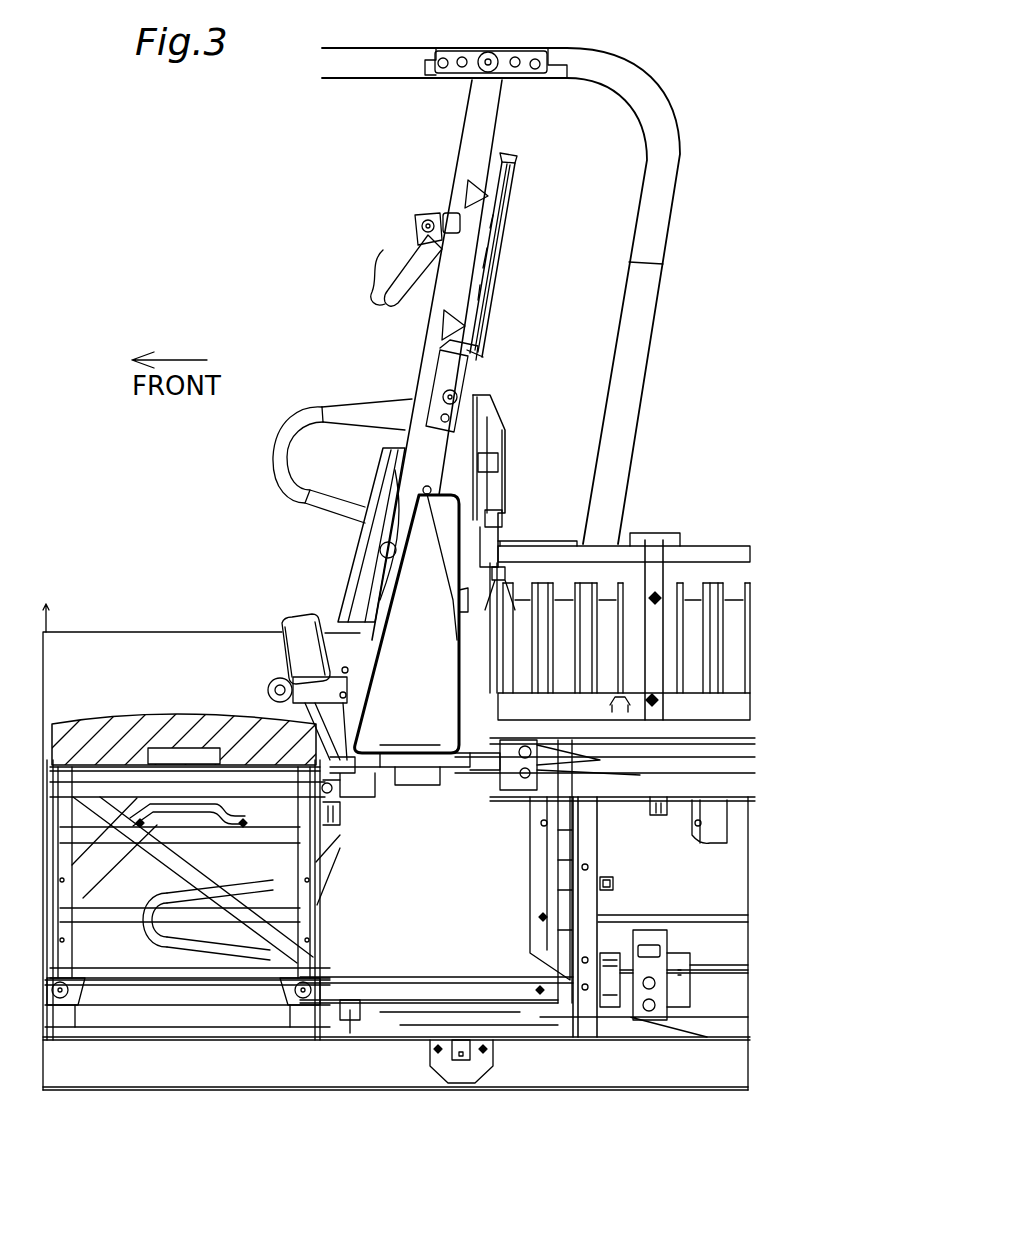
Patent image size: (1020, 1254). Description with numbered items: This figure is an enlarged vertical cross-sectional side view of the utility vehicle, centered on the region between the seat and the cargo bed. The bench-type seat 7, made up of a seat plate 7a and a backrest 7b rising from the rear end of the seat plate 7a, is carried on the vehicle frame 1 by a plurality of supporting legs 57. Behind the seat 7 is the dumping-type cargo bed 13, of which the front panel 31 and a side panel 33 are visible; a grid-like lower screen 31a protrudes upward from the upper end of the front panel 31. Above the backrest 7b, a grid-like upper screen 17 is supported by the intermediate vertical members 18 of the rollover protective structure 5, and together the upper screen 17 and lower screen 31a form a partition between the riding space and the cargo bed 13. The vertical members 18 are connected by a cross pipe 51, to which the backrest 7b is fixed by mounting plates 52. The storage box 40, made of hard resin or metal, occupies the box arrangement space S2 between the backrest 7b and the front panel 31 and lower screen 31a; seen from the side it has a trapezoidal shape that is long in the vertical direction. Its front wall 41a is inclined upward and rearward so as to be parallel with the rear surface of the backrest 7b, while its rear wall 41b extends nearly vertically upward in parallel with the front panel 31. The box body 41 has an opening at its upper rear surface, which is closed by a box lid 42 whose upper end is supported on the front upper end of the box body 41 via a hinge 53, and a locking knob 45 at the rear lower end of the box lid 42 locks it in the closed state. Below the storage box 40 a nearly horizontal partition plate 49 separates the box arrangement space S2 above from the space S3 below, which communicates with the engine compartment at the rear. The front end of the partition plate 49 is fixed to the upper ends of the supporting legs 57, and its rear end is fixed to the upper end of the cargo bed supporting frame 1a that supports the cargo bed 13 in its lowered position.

The vehicle frame 1 is at (290, 1057).
The cargo bed supporting frame 1a is at (587, 848).
The rollover protective structure (R.O.P.S.) 5 is at (693, 128).
The bench-type seat 7 is at (191, 670).
The seat plate 7a is at (120, 747).
The backrest 7b is at (350, 618).
The dumping-type cargo bed 13 is at (733, 495).
The grid-like upper screen 17 is at (505, 220).
The vertical members 18 is at (471, 143).
The front panel 31 is at (537, 743).
The grid-like lower screen 31a is at (503, 425).
The side panels 33 is at (733, 640).
The storage box 40 is at (420, 764).
The box body 41 is at (448, 760).
The front wall 41a is at (400, 737).
The rear wall 41b is at (370, 678).
The box lid 42 is at (455, 518).
The locking knob 45 is at (437, 600).
The partition plate 49 is at (410, 764).
The cross pipe 51 is at (368, 541).
The mounting plates 52 is at (382, 570).
The hinge 53 is at (436, 480).
The supporting legs 57 is at (340, 868).
The box arrangement space S2 is at (460, 478).
The space S3 is at (452, 930).